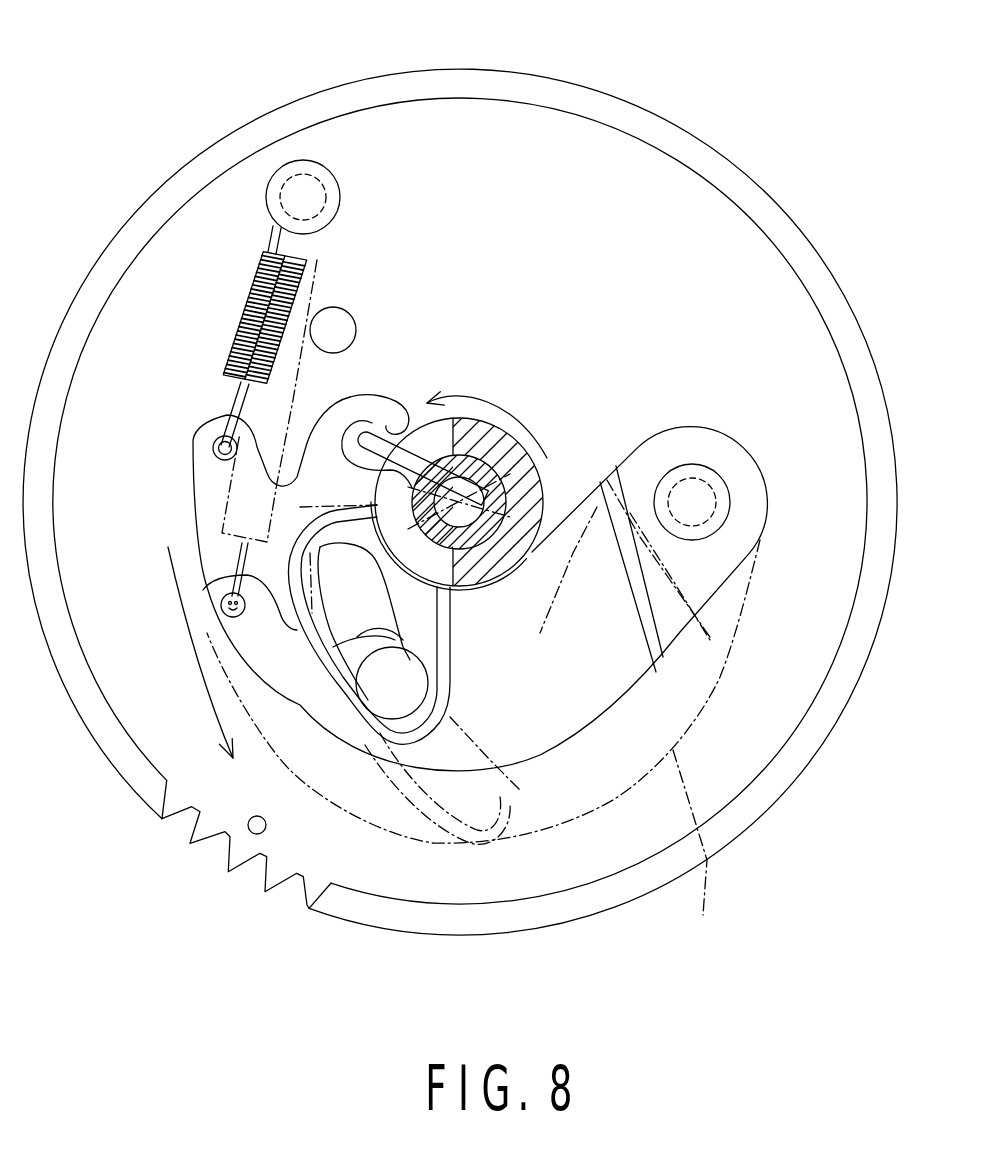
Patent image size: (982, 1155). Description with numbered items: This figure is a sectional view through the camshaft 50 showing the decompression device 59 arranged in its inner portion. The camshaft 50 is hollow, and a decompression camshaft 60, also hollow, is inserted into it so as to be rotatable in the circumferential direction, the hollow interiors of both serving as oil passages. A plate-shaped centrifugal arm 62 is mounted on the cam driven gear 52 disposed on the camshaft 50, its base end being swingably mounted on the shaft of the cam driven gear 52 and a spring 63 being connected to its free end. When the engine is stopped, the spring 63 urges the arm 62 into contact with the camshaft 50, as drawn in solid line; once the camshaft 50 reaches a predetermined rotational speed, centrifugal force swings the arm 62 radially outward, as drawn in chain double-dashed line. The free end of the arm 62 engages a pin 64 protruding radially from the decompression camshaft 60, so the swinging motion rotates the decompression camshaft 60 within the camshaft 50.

The camshaft 50 is at (535, 456).
The cam driven gear 52 is at (546, 90).
The decompression device 59 is at (743, 433).
The decompression camshaft 60 is at (476, 420).
The centrifugal arm 62 is at (580, 737).
The spring 63 is at (247, 303).
The pin 64 is at (424, 436).